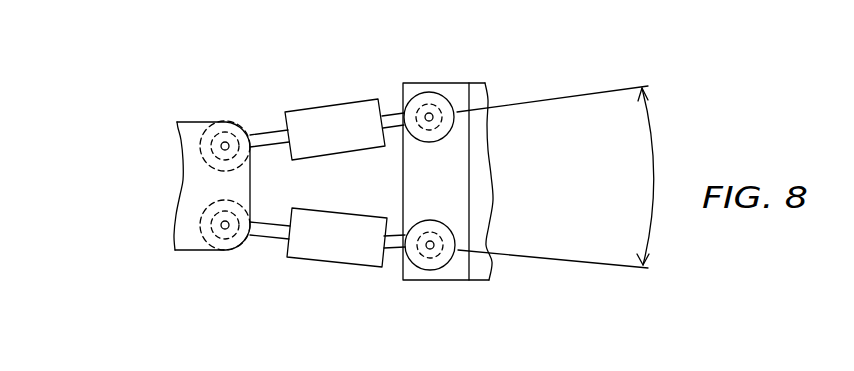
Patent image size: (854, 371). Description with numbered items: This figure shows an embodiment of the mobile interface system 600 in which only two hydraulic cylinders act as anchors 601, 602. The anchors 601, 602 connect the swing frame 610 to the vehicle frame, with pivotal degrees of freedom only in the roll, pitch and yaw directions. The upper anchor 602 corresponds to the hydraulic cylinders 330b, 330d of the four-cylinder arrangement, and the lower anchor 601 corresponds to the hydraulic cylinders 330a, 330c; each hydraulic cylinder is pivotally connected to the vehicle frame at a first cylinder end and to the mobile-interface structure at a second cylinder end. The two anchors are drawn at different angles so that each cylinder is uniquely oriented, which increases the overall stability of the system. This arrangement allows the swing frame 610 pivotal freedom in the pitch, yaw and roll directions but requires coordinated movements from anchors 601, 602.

The mobile interface system 600 is at (376, 64).
The swing frame 610 is at (190, 187).
The anchor 602 is at (245, 108).
The hydraulic cylinder 330b is at (245, 108).
The hydraulic cylinder 330d is at (322, 113).
The anchor 601 is at (305, 269).
The hydraulic cylinder 330a is at (305, 269).
The hydraulic cylinder 330c is at (307, 248).